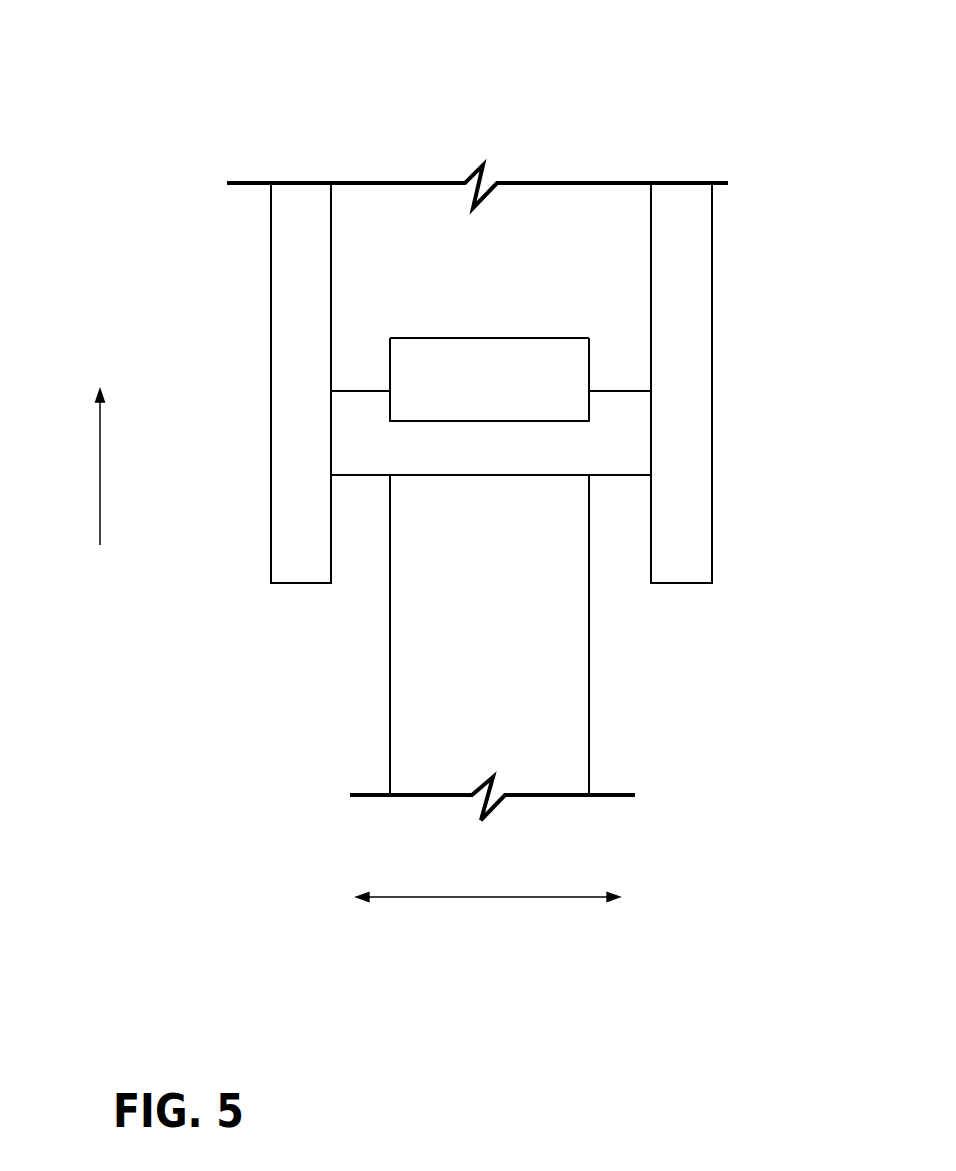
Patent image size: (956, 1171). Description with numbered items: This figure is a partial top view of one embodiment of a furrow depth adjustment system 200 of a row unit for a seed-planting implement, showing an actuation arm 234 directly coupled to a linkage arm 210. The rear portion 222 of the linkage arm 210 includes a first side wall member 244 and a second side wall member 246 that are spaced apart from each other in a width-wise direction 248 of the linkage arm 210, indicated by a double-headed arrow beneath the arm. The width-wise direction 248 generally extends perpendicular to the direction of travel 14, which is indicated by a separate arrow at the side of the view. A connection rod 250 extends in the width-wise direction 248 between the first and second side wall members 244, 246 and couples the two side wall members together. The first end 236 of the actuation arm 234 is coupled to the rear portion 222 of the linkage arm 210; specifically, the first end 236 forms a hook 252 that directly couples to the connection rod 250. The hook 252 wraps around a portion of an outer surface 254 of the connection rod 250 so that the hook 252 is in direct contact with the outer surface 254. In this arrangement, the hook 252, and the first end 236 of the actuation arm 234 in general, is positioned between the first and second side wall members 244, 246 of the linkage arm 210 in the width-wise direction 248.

The direction of travel 14 is at (100, 492).
The furrow depth adjustment system 200 is at (175, 127).
The linkage arm 210 is at (233, 293).
The rear portion 222 is at (238, 415).
The actuation arm 234 is at (390, 724).
The first end 236 is at (486, 307).
The first side wall member 244 is at (271, 497).
The second side wall member 246 is at (712, 446).
The width-wise direction 248 is at (472, 897).
The connection rod 250 is at (613, 388).
The hook 252 is at (523, 352).
The outer surface 254 is at (522, 450).